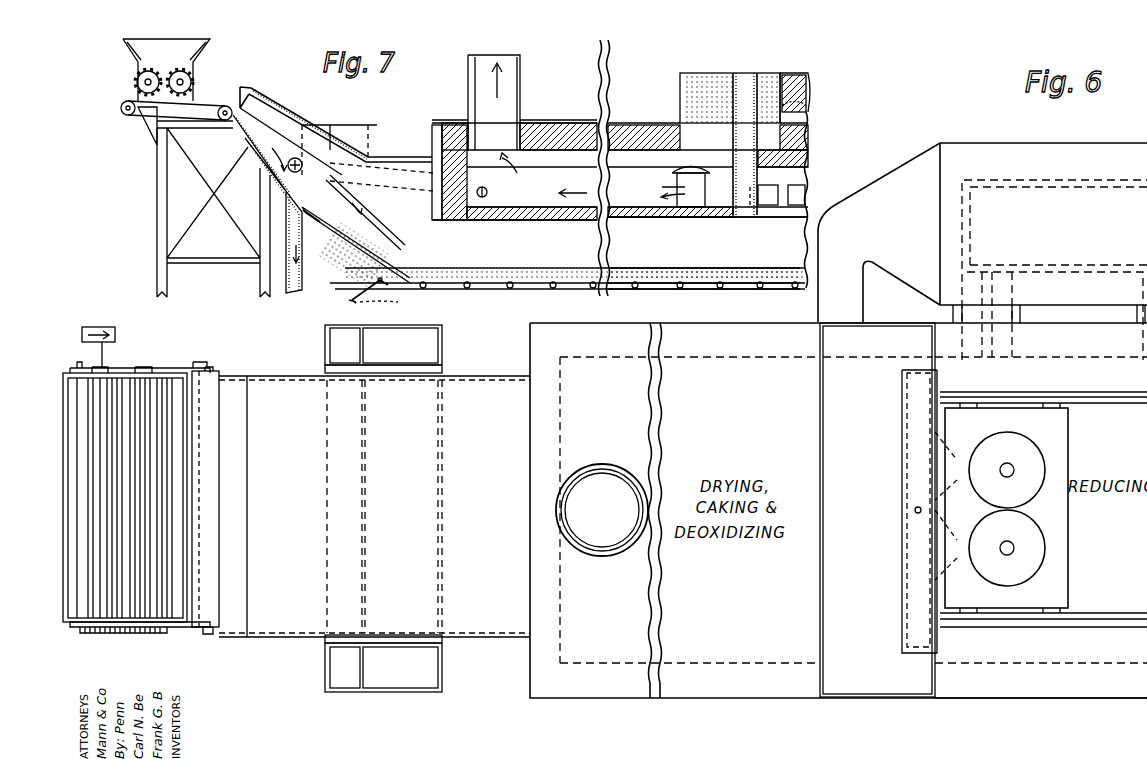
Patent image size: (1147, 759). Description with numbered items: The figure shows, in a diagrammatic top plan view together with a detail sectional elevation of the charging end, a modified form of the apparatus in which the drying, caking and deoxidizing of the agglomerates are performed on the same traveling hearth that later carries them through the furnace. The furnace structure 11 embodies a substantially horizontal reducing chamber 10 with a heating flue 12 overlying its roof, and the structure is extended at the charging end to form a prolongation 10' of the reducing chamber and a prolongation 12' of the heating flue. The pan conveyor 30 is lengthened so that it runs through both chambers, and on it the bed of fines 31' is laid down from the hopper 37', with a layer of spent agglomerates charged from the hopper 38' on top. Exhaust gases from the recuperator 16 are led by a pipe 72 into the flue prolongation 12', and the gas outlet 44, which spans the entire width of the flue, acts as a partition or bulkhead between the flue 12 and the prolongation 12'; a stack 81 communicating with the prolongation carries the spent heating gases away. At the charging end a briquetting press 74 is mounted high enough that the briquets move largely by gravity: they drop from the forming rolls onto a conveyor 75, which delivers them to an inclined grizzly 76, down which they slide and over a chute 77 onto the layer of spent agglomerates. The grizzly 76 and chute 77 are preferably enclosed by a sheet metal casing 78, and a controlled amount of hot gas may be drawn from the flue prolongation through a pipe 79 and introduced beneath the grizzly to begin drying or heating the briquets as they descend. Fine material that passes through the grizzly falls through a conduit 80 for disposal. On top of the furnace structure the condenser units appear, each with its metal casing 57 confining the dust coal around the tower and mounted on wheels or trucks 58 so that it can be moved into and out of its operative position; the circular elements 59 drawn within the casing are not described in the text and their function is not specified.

In FIG. 7, the reducing chamber 10 is at (708, 236).
In FIG. 7, the prolongation of the reducing chamber 10' is at (532, 238).
In FIG. 6, the furnace structure 11 is at (1130, 598).
In FIG. 7, the heating flue 12 is at (804, 182).
In FIG. 7, the prolongation of the heating flue 12' is at (532, 177).
In FIG. 6, the recuperator 16 is at (1085, 145).
In FIG. 7, the pan conveyor 30 is at (577, 286).
In FIG. 7, the bed of fines 31' is at (565, 290).
In FIG. 7, the hopper for fines 37' is at (356, 247).
In FIG. 6, the hopper for fines 37' is at (374, 532).
In FIG. 7, the hopper for spent agglomerates 38' is at (336, 243).
In FIG. 6, the hopper for spent agglomerates 38' is at (408, 508).
In FIG. 7, the gas outlet 44 is at (752, 97).
In FIG. 6, the gas outlet 44 is at (913, 522).
In FIG. 6, the metal casing 57 is at (1070, 517).
In FIG. 6, the wheels or trucks 58 is at (1058, 395).
In FIG. 6, the reducing rolls 59 is at (1037, 467).
In FIG. 7, the pipe 72 is at (677, 185).
In FIG. 6, the pipe 72 is at (863, 305).
In FIG. 7, the briquetting press 74 is at (135, 70).
In FIG. 6, the briquetting press 74 is at (135, 390).
In FIG. 7, the conveyor 75 is at (177, 103).
In FIG. 6, the conveyor 75 is at (173, 370).
In FIG. 7, the inclined grizzly 76 is at (273, 135).
In FIG. 7, the chute 77 is at (377, 223).
In FIG. 7, the sheet metal casing 78 is at (300, 101).
In FIG. 7, the pipe 79 is at (430, 173).
In FIG. 7, the conduit 80 is at (298, 285).
In FIG. 7, the stack 81 is at (503, 72).
In FIG. 6, the stack 81 is at (594, 465).